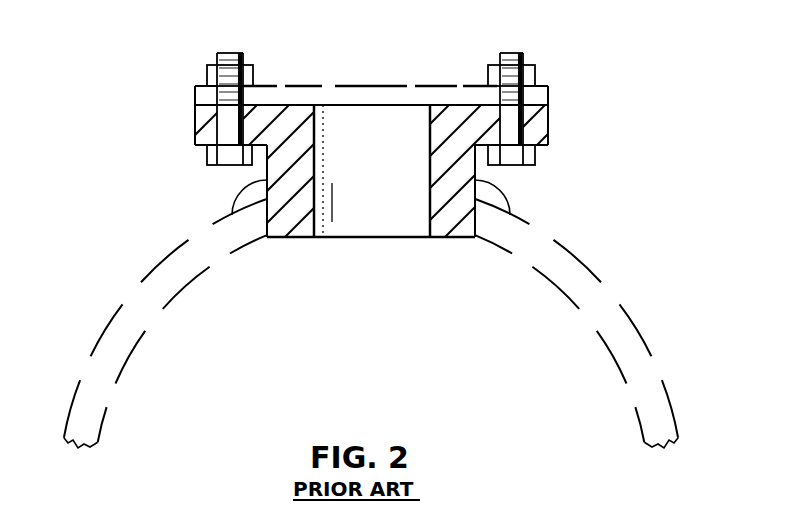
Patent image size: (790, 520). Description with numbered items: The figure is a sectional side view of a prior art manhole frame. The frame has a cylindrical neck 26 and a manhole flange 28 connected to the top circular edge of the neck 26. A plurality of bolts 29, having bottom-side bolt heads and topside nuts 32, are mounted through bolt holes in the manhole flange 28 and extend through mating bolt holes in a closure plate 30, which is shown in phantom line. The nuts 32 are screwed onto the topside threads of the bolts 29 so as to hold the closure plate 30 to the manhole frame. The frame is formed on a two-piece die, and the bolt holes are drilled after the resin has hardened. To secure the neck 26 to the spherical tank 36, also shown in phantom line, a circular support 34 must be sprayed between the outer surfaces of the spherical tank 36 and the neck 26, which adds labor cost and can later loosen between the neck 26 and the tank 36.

The cylindrical neck 26 is at (299, 237).
The manhole flange 28 is at (210, 128).
The bolts 29 is at (212, 98).
The closure plate 30 is at (348, 86).
The nuts 32 is at (212, 72).
The circular support 34 is at (257, 196).
The spherical tank 36 is at (620, 321).